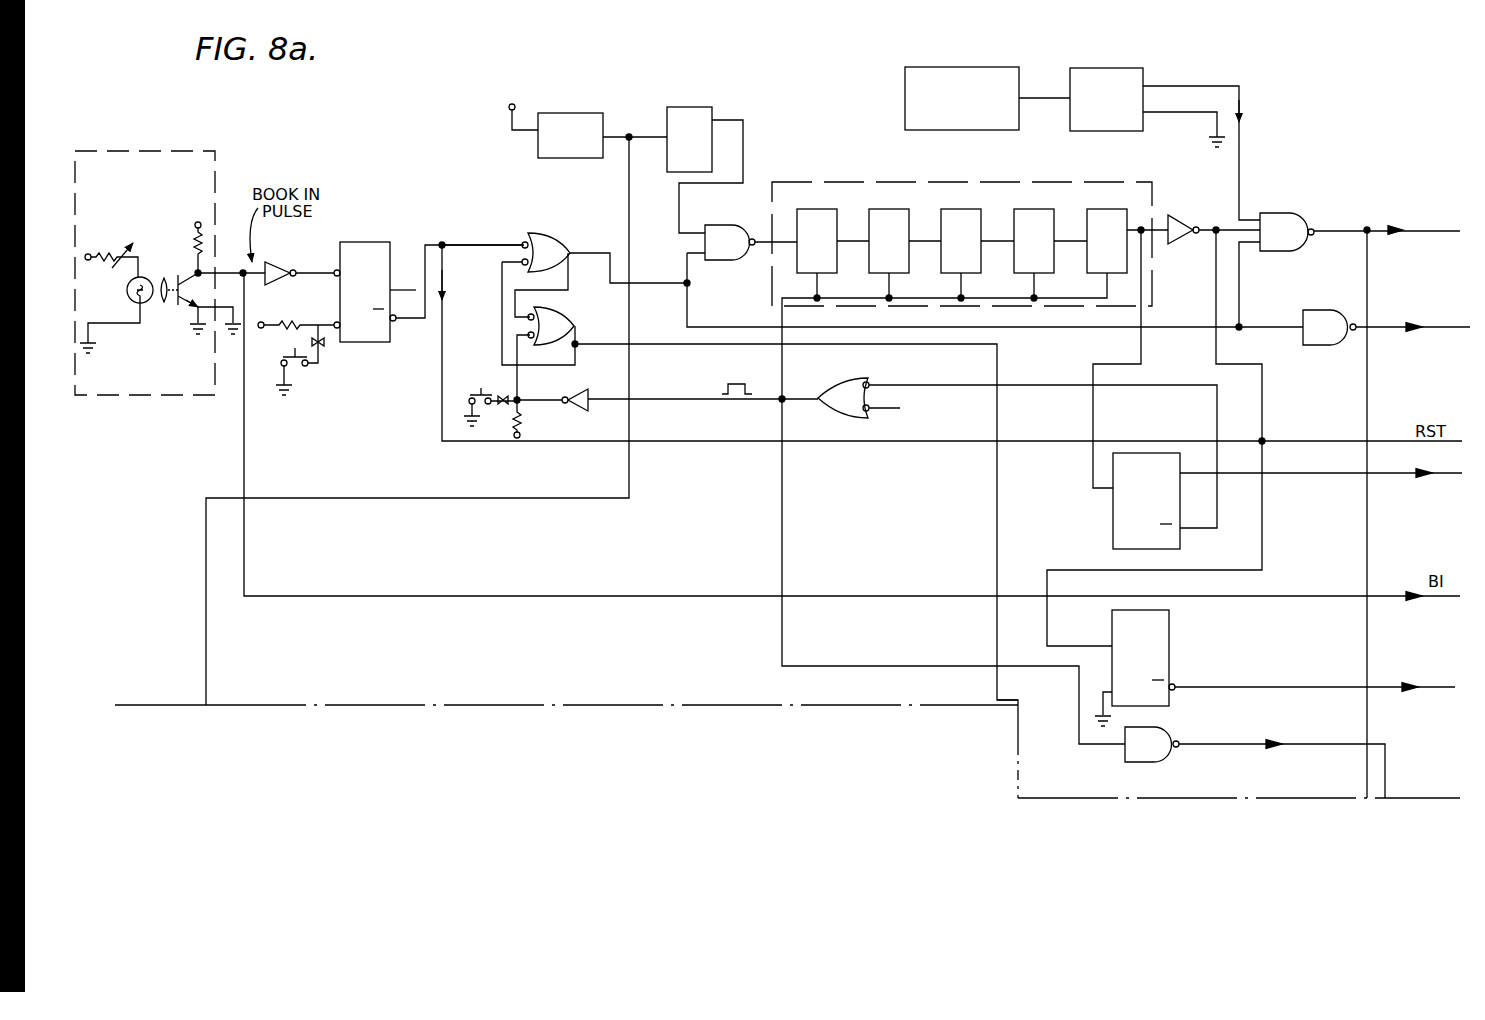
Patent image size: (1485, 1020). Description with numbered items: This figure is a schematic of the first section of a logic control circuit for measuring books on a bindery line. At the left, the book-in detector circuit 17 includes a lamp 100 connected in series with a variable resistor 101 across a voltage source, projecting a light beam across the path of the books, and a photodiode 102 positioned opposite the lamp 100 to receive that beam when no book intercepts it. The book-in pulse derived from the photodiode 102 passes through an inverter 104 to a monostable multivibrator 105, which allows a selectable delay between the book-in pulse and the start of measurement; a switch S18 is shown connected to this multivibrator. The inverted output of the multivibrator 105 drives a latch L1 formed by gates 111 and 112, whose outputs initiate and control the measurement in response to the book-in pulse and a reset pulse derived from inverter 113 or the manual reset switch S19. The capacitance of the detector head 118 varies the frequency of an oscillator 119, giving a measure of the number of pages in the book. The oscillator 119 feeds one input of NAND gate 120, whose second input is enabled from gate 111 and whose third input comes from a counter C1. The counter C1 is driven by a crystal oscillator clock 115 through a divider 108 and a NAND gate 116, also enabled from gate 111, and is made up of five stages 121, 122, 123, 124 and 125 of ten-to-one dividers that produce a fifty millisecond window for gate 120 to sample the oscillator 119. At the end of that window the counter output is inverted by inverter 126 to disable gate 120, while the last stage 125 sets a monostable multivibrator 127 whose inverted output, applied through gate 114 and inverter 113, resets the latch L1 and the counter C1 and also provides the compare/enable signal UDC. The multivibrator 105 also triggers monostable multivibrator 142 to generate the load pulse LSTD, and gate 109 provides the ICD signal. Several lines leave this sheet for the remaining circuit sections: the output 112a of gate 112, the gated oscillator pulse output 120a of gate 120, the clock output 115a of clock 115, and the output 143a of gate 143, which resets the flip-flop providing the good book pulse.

The book-in detector circuit 17 is at (160, 395).
The lamp 100 is at (146, 278).
The variable resistor 101 is at (118, 250).
The photodiode 102 is at (180, 298).
The inverter 104 is at (277, 282).
The monostable multivibrator 105 is at (370, 342).
The divider 108 is at (688, 107).
The gate 109 is at (1313, 345).
The gate 111 is at (548, 233).
The gate 112 is at (520, 307).
The output of gate 112 112a is at (998, 680).
The inverter 113 is at (576, 389).
The gate 114 is at (845, 416).
The crystal oscillator 115 is at (570, 113).
The output of clock 115 115a is at (206, 655).
The NAND gate 116 is at (740, 225).
The detector head 118 is at (952, 130).
The oscillator 119 is at (1103, 131).
The NAND gate 120 is at (1285, 251).
The output of gate 120 120a is at (1364, 771).
The counter stage 121 is at (837, 217).
The counter stage 122 is at (909, 217).
The counter stage 123 is at (981, 217).
The counter stage 124 is at (1054, 217).
The last counter stage 125 is at (1127, 217).
The inverter 126 is at (1183, 215).
The monostable multivibrator 127 is at (1180, 545).
The monostable multivibrator 142 is at (1169, 700).
The gate 143 is at (1160, 762).
The output of gate 143 143a is at (1385, 750).
The switch S18 is at (297, 367).
The manual reset switch S19 is at (470, 392).
The latch L1 is at (950, 476).
The counter C1 is at (980, 448).